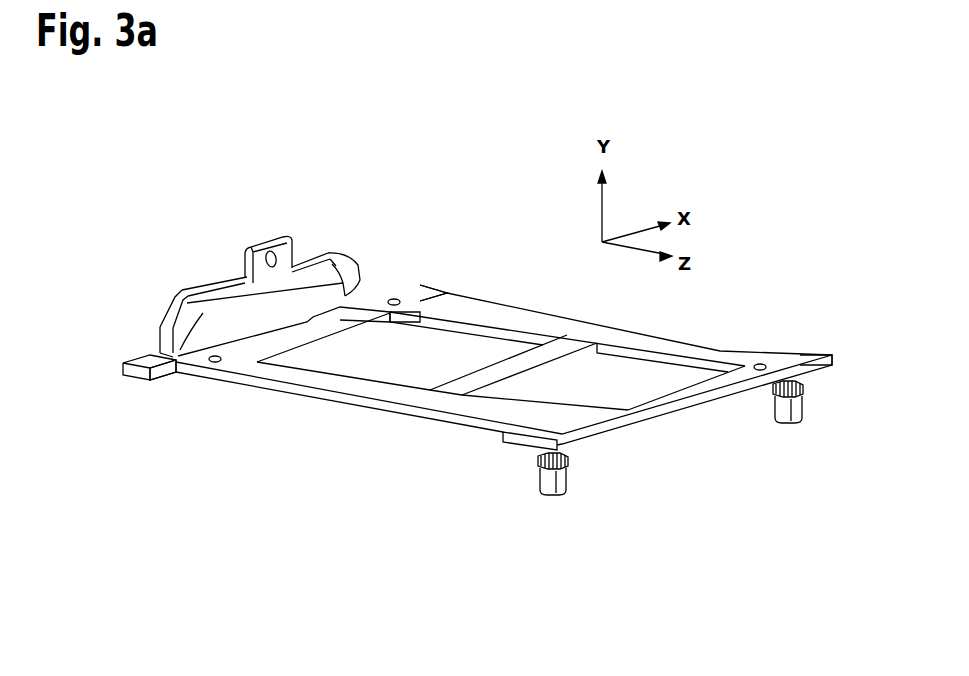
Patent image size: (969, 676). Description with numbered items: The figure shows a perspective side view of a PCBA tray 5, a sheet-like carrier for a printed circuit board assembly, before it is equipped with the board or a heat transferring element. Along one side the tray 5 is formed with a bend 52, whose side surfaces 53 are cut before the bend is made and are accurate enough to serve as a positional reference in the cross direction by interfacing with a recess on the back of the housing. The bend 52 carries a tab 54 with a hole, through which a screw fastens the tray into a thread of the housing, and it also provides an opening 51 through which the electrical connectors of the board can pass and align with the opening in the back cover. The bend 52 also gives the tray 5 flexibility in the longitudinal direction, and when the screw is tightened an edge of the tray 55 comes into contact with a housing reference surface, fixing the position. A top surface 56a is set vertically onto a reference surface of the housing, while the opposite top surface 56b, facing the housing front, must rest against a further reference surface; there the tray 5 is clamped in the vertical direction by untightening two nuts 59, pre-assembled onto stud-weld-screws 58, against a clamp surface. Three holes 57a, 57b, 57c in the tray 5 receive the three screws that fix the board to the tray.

The PCBA tray 5 is at (352, 388).
The opening 51 is at (326, 258).
The bend 52 is at (352, 260).
The side surfaces 53 is at (298, 242).
The tab 54 is at (264, 252).
The edge of the tray 55 is at (185, 378).
The top surface 56a is at (150, 363).
The top surface 56b is at (535, 432).
The hole 57a is at (220, 359).
The hole 57b is at (394, 299).
The hole 57c is at (762, 364).
The stud-weld-screws 58 is at (542, 460).
The nuts 59 is at (556, 492).